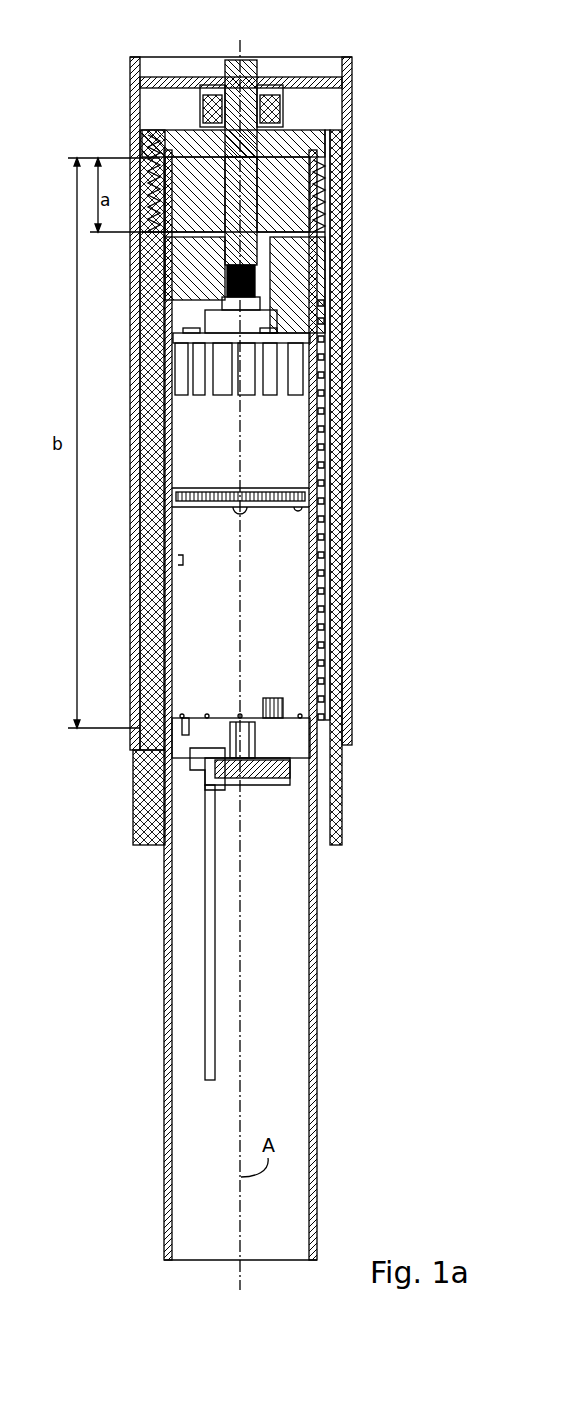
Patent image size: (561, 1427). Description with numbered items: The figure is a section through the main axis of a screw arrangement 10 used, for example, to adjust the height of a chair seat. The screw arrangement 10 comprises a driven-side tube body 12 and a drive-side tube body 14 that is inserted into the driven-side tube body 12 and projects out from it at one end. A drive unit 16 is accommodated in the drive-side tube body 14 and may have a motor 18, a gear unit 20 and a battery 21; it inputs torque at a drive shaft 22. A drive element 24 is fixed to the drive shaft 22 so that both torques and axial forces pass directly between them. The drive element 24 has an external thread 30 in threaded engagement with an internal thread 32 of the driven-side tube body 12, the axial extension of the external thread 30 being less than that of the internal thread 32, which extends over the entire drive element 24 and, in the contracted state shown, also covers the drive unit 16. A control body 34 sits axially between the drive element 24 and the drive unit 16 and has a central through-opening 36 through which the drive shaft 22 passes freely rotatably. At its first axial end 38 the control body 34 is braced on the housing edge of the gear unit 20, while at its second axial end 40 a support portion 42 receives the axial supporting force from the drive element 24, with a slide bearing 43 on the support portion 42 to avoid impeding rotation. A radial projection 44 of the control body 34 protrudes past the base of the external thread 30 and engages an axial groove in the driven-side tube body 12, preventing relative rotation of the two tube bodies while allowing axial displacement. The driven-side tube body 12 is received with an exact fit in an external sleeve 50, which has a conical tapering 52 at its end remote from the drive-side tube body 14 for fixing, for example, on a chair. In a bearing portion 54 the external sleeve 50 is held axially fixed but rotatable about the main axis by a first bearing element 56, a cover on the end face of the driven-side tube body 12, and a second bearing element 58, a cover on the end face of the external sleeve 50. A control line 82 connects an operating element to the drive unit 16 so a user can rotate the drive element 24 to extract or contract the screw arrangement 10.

The screw arrangement 10 is at (130, 56).
The driven-side tube body 12 is at (343, 762).
The drive-side tube body 14 is at (311, 924).
The drive unit 16 is at (297, 534).
The motor 18 is at (292, 573).
The gear unit 20 is at (300, 445).
The battery 21 is at (285, 770).
The drive shaft 22 is at (305, 425).
The drive element 24 is at (180, 212).
The external thread 30 is at (150, 160).
The internal thread 32 is at (152, 162).
The control body 34 is at (326, 291).
The central through-opening 36 is at (262, 270).
The first axial end 38 is at (312, 330).
The second axial end 40 is at (326, 240).
The support portion 42 is at (320, 225).
The slide bearing 43 is at (383, 196).
The radial projection 44 is at (331, 268).
The external sleeve 50 is at (355, 720).
The conical tapering 52 is at (347, 114).
The bearing portion 54 is at (262, 86).
The first bearing element 56 is at (302, 130).
The second bearing element 58 is at (306, 81).
The control line 82 is at (210, 1007).